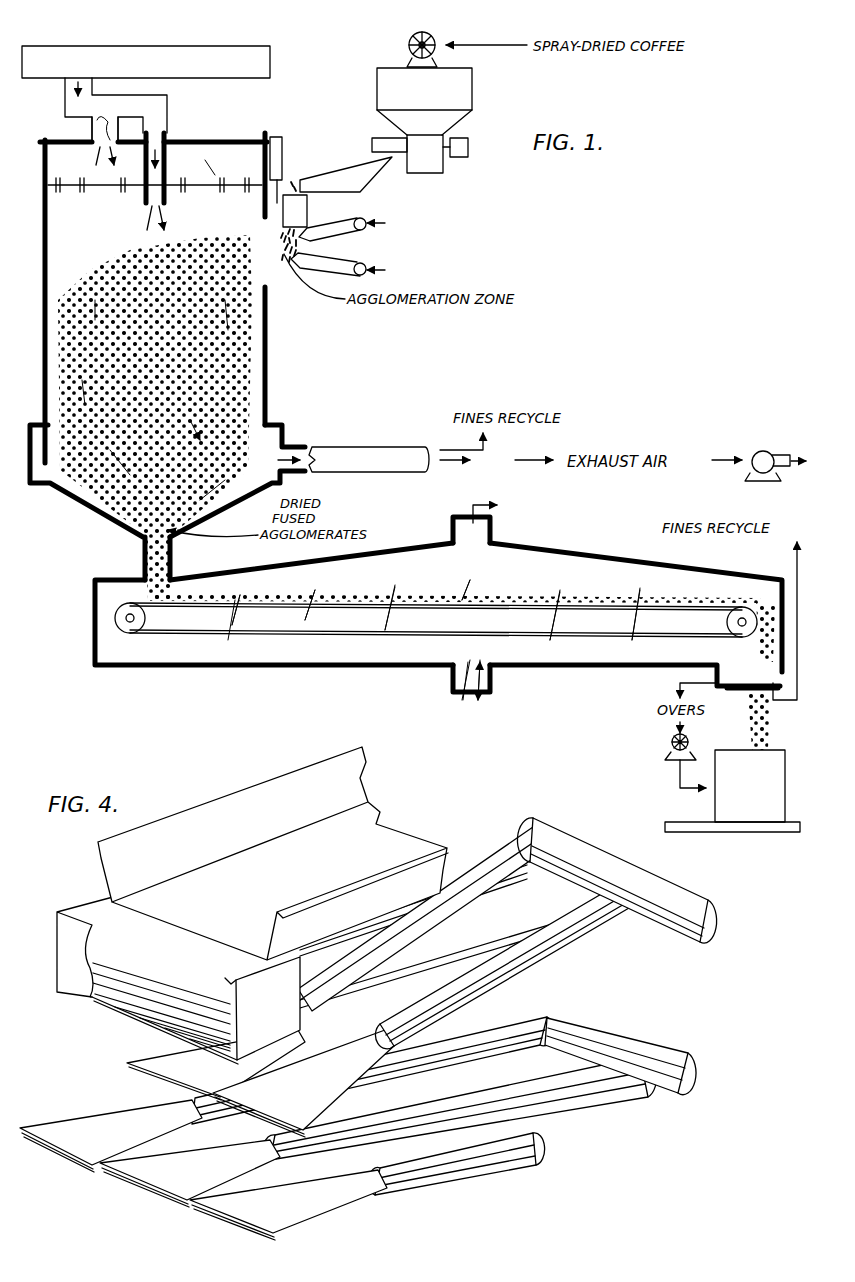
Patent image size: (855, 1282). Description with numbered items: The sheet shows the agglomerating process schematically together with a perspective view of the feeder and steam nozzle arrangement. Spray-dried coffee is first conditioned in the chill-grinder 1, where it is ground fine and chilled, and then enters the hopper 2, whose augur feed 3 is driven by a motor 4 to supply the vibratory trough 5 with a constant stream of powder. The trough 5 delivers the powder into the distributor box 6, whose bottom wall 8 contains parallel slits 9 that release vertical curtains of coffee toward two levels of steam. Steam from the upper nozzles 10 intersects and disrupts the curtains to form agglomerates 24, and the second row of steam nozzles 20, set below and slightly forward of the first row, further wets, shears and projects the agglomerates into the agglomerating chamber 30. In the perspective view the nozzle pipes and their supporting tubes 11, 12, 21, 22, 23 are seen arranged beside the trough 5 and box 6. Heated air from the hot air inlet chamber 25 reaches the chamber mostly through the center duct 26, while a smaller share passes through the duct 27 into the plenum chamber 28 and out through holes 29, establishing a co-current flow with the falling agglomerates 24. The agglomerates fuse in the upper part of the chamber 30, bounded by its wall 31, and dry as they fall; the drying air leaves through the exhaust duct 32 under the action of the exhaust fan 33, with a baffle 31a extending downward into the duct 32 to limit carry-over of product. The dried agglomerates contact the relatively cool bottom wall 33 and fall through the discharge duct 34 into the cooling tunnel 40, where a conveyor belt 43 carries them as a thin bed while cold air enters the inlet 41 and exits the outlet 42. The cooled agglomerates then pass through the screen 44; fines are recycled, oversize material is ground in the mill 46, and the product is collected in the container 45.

In FIG. 1, the chill-grinder 1 is at (405, 62).
In FIG. 1, the hopper 2 is at (473, 75).
In FIG. 1, the augur feed 3 is at (380, 138).
In FIG. 1, the motor 4 is at (470, 147).
In FIG. 1, the vibratory trough 5 is at (337, 171).
In FIG. 4, the vibratory trough 5 is at (290, 790).
In FIG. 1, the distributor box 6 is at (307, 213).
In FIG. 4, the distributor box 6 is at (57, 939).
In FIG. 4, the bottom wall 8 is at (105, 1010).
In FIG. 4, the parallel slits 9 is at (120, 1028).
In FIG. 1, the upper nozzles 10 is at (324, 238).
In FIG. 4, the upper nozzles 10 is at (343, 1044).
In FIG. 4, the diagonal brace tube 11 is at (550, 932).
In FIG. 4, the cross tube 12 is at (690, 906).
In FIG. 1, the second row of steam nozzles 20 is at (318, 257).
In FIG. 4, the second row of steam nozzles 20 is at (330, 1196).
In FIG. 4, the rail tubes 21 is at (517, 1084).
In FIG. 4, the cross tube 22 is at (678, 1058).
In FIG. 1, the steam nozzle 23 is at (310, 231).
In FIG. 1, the agglomerates 24 is at (238, 241).
In FIG. 1, the hot air inlet chamber 25 is at (240, 50).
In FIG. 1, the center duct 26 is at (167, 136).
In FIG. 1, the duct 27 is at (92, 127).
In FIG. 1, the plenum chamber 28 is at (48, 168).
In FIG. 1, the holes 29 is at (52, 190).
In FIG. 1, the agglomerating chamber 30 is at (276, 400).
In FIG. 1, the duct 31 is at (42, 303).
In FIG. 1, the baffle 31a is at (270, 443).
In FIG. 1, the exhaust duct 32 is at (362, 451).
In FIG. 1, the exhaust fan / relatively cool wall 33 is at (105, 520).
In FIG. 1, the discharge duct 34 is at (143, 560).
In FIG. 1, the cooling tunnel 40 is at (195, 674).
In FIG. 1, the inlet 41 is at (453, 687).
In FIG. 1, the outlet 42 is at (496, 533).
In FIG. 1, the conveyor belt 43 is at (228, 634).
In FIG. 1, the screen 44 is at (745, 684).
In FIG. 1, the container 45 is at (778, 752).
In FIG. 1, the mill 46 is at (671, 744).